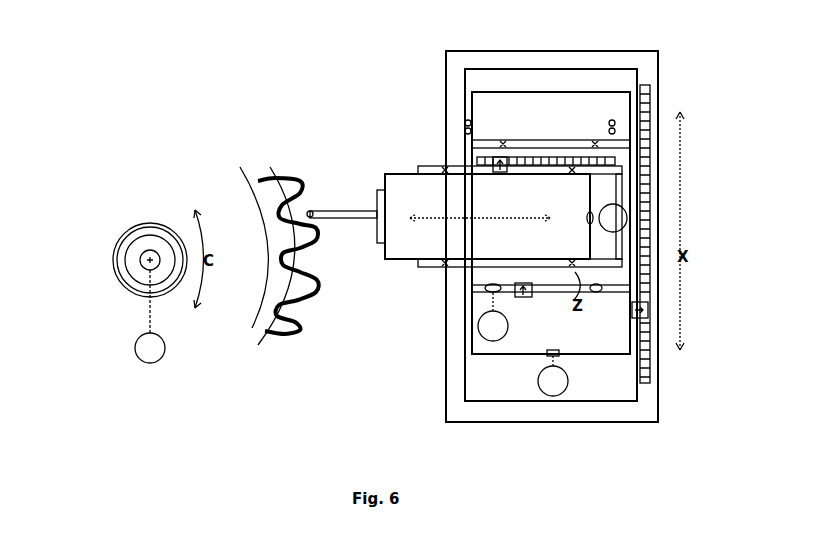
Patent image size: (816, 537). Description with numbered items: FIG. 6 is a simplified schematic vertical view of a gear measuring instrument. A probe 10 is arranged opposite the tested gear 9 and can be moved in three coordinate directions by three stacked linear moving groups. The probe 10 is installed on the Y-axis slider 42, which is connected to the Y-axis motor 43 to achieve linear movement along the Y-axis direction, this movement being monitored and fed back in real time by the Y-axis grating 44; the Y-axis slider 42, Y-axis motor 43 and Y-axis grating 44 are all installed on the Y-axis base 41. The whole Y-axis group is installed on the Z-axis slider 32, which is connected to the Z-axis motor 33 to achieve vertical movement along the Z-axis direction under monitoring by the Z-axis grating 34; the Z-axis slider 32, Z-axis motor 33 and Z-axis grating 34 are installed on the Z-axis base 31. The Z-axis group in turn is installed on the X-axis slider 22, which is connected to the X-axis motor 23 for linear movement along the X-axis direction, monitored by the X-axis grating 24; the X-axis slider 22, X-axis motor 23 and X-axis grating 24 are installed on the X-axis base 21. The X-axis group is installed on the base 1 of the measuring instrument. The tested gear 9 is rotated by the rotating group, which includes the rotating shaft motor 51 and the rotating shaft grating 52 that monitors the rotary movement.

The base 1 is at (642, 421).
The tested gear 9 is at (265, 332).
The probe 10 is at (343, 210).
The X-axis base 21 is at (623, 102).
The X-axis slider 22 is at (625, 78).
The X-axis motor 23 is at (558, 396).
The X-axis grating 24 is at (645, 385).
The Z-axis base 31 is at (647, 153).
The Z-axis slider 32 is at (650, 130).
The Z-axis motor 33 is at (486, 340).
The Z-axis grating 34 is at (515, 300).
The Y-axis base 41 is at (390, 172).
The Y-axis slider 42 is at (620, 183).
The Y-axis motor 43 is at (622, 210).
The Y-axis grating 44 is at (465, 140).
The rotating shaft motor 51 is at (135, 348).
The rotating shaft grating 52 is at (125, 282).